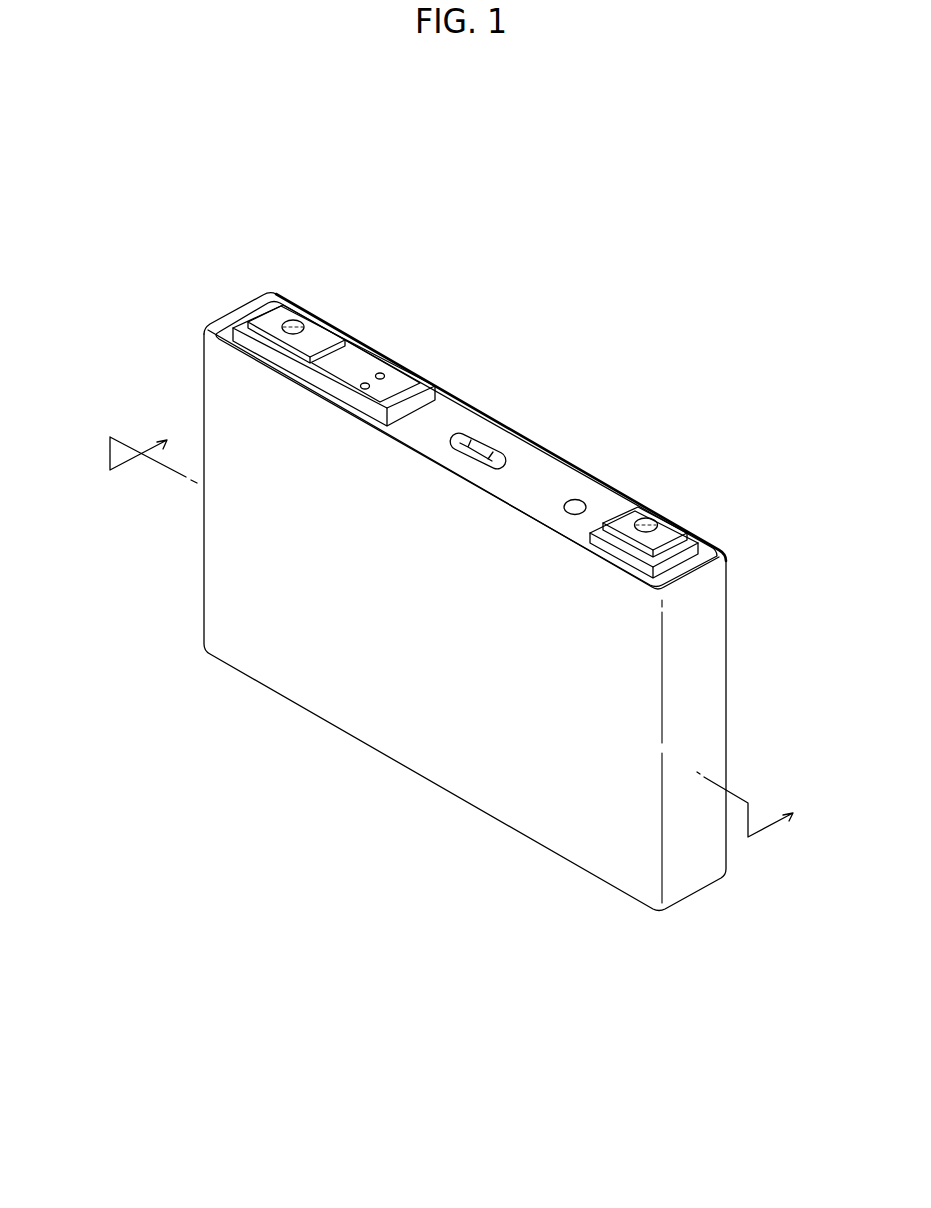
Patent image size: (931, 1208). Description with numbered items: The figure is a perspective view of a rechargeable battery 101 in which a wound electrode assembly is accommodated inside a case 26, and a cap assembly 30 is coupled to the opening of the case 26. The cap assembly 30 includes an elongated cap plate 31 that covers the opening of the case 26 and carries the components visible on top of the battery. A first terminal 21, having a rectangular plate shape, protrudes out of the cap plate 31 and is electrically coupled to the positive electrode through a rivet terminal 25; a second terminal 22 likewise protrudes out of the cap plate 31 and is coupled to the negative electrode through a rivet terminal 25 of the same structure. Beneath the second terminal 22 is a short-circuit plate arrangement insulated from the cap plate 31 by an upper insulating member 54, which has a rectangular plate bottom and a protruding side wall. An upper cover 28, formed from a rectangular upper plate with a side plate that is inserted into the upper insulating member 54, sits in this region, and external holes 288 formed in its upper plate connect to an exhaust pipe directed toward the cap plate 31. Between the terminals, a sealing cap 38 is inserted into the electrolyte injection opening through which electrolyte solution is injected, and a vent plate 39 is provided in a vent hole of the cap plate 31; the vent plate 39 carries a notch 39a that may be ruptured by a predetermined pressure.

The rechargeable battery 101 is at (533, 141).
The first terminal 21 is at (672, 530).
The second terminal 22 is at (327, 337).
The rivet terminal 25 is at (296, 320).
The case 26 is at (418, 753).
The upper cover 28 is at (355, 360).
The external hole 288 is at (383, 374).
The cap assembly 30 is at (562, 462).
The cap plate 31 is at (444, 417).
The sealing cap 38 is at (582, 503).
The vent plate 39 is at (480, 432).
The notch 39a is at (503, 448).
The upper insulating member 54 is at (408, 367).